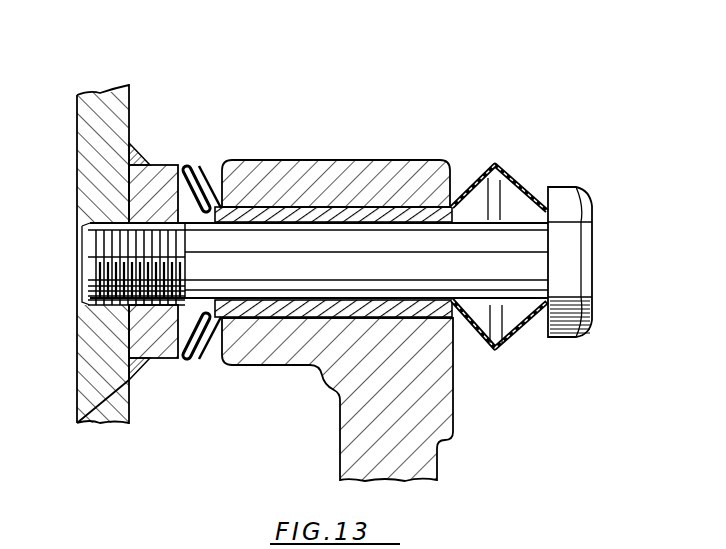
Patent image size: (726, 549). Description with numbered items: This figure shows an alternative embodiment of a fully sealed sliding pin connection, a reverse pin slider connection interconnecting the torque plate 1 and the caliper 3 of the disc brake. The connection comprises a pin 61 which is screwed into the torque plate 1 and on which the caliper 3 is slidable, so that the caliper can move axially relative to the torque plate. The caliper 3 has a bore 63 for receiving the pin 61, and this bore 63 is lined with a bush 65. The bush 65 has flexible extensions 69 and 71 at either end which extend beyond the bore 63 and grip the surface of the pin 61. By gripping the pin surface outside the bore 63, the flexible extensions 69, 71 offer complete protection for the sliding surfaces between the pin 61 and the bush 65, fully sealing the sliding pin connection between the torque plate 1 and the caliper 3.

The torque plate 1 is at (86, 200).
The caliper 3 is at (413, 430).
The pin 61 is at (465, 282).
The bore 63 is at (281, 207).
The bush 65 is at (393, 205).
The flexible extension 69 is at (213, 180).
The flexible extension 71 is at (519, 336).